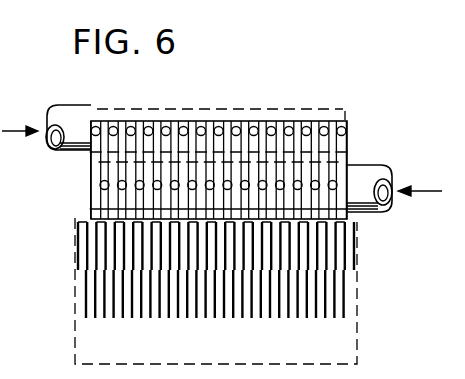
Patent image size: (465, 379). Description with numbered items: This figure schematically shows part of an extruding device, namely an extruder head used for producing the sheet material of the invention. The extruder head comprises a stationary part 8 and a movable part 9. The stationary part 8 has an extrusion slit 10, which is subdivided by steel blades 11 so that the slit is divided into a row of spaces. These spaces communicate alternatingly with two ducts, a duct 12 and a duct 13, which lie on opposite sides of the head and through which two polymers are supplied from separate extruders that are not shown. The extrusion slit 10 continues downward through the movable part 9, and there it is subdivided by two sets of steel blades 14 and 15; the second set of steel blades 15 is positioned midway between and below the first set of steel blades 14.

The stationary part 8 is at (91, 164).
The movable part 9 is at (77, 262).
The extrusion slit 10 is at (91, 179).
The steel blades 11 is at (95, 199).
The duct 12 is at (68, 106).
The duct 13 is at (368, 172).
The steel blades 14 is at (315, 243).
The steel blades 15 is at (317, 287).